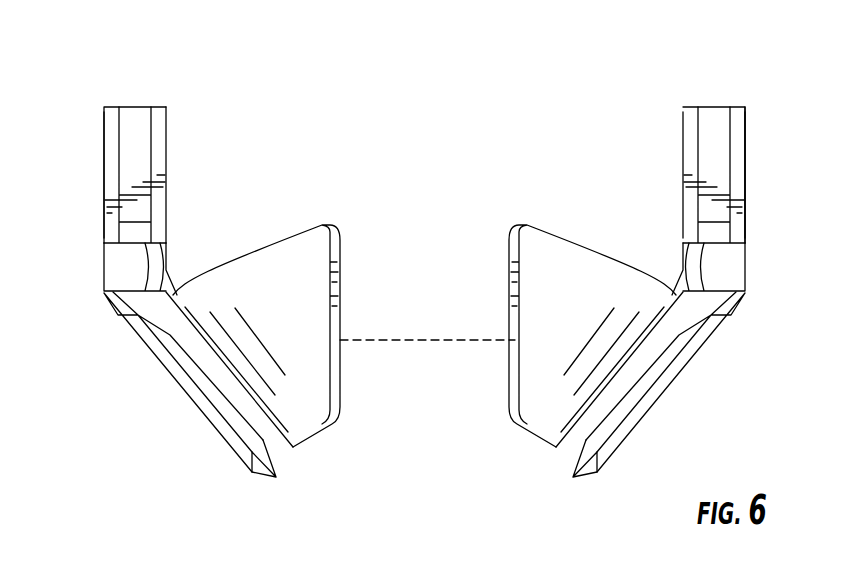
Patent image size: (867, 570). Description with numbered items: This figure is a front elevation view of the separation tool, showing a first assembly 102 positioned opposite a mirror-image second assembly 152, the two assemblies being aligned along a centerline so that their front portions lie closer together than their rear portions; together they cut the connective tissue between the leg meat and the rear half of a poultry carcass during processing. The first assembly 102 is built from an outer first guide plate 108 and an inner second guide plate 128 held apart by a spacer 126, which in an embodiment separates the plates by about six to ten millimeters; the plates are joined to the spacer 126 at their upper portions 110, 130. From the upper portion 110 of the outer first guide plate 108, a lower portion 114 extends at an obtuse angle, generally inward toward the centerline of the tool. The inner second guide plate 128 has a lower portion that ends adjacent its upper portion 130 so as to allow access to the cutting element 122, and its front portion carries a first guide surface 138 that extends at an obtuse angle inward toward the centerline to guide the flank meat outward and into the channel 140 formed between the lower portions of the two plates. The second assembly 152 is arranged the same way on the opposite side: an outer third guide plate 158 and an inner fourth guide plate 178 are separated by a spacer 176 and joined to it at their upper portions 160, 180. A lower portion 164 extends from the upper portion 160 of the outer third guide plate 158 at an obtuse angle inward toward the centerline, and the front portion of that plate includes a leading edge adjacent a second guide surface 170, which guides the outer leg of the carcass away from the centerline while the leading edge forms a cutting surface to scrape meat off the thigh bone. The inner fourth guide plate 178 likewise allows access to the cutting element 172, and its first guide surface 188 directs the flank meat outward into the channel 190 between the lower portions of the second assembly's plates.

The first assembly 102 is at (93, 387).
The outer first guide plate 108 is at (104, 106).
The upper portion 110 is at (103, 175).
The lower portion 114 is at (182, 393).
The cutting element 122 is at (273, 474).
The spacer 126 is at (129, 106).
The inner second guide plate 128 is at (168, 107).
The upper portion 130 is at (167, 177).
The first guide surface 138 is at (297, 292).
The channel 140 is at (296, 469).
The second assembly 152 is at (811, 221).
The outer third guide plate 158 is at (745, 107).
The upper portion 160 is at (746, 176).
The lower portion 164 is at (672, 384).
The second guide surface 170 is at (723, 263).
The cutting element 172 is at (573, 476).
The spacer 176 is at (718, 106).
The inner fourth guide plate 178 is at (682, 107).
The upper portion 180 is at (683, 178).
The first guide surface 188 is at (547, 270).
The channel 190 is at (553, 468).